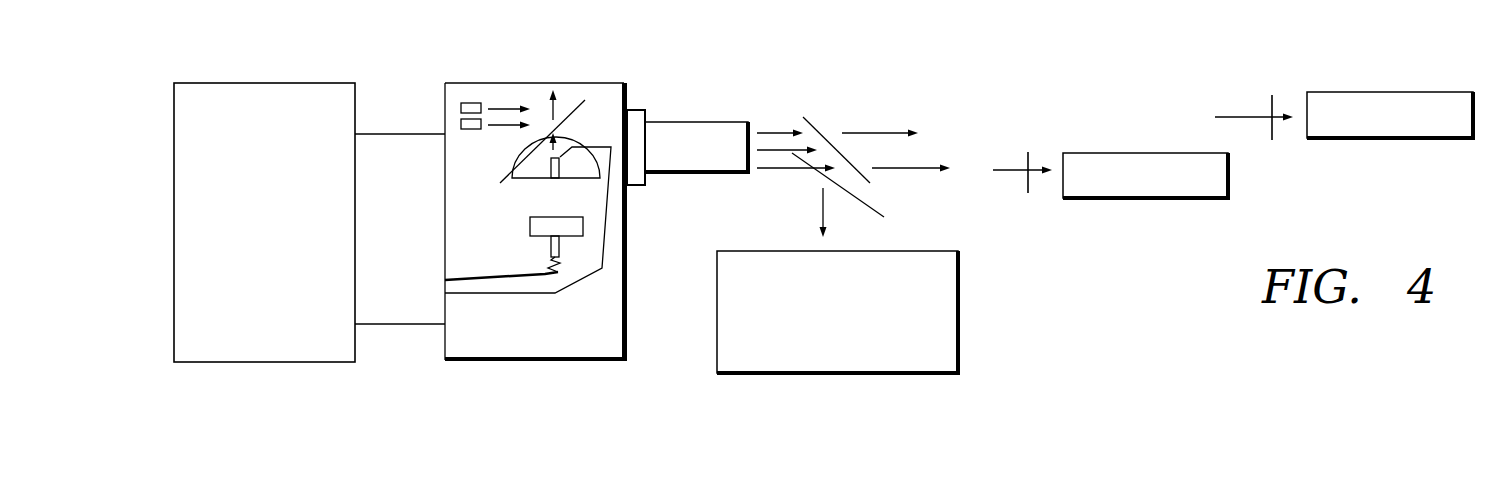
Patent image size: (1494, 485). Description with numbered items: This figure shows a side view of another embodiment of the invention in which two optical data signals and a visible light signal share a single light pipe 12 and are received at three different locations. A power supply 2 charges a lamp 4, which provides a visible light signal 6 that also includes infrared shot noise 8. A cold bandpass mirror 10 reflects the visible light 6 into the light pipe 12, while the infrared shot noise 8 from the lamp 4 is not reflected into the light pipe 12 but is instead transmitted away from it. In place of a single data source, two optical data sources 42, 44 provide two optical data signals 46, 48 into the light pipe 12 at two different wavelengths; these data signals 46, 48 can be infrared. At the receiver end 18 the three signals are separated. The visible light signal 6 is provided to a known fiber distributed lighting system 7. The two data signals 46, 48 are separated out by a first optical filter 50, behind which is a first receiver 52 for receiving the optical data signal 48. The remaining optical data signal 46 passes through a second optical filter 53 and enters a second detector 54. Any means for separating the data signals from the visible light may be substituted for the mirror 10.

The power supply 2 is at (277, 264).
The lamp 4 is at (541, 204).
The visible light signal 6 is at (552, 145).
The fiber distributed lighting system 7 is at (960, 342).
The infrared shot noise 8 is at (545, 140).
The cold bandpass mirror 10 is at (585, 100).
The light pipe 12 is at (692, 175).
The receiver end 18 is at (1116, 289).
The optical data source 42 is at (469, 102).
The optical data source 44 is at (460, 122).
The optical data signal 46 is at (498, 108).
The optical data signal 48 is at (502, 127).
The first optical filter 50 is at (1029, 194).
The first receiver 52 is at (1117, 199).
The second optical filter 53 is at (1273, 98).
The second detector 54 is at (1387, 139).